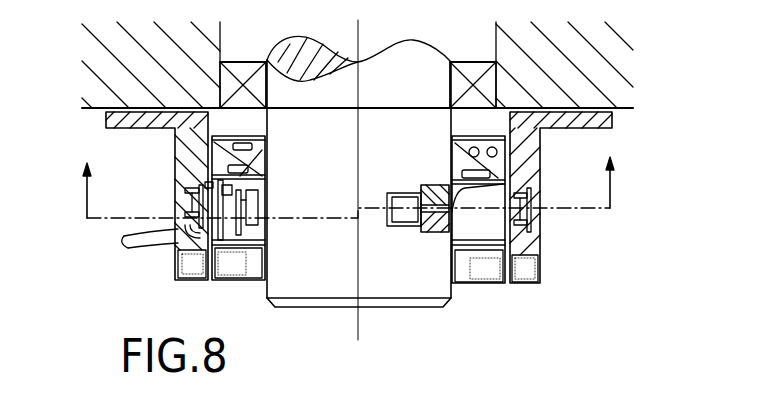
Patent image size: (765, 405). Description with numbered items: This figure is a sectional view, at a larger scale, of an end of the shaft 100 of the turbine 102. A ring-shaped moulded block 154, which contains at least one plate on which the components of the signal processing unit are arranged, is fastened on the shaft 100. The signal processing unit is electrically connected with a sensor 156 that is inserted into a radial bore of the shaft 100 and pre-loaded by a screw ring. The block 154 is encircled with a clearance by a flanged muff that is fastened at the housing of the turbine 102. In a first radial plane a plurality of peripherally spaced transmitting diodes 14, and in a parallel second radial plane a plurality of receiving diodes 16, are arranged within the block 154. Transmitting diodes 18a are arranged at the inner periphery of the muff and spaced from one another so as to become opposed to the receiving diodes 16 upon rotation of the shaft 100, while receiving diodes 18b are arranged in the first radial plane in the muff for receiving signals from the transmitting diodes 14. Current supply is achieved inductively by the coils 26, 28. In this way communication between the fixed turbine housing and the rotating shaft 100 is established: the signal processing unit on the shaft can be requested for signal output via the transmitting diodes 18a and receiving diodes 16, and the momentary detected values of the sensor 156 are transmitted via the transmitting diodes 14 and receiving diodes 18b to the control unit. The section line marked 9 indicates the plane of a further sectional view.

The turbine 102 is at (592, 75).
The transmitting diodes 14 is at (220, 280).
The coil 26 is at (528, 283).
The coil 28 is at (494, 283).
The ring-shaped moulded block 154 is at (257, 263).
The shaft 100 is at (326, 290).
The sensor 156 is at (403, 216).
The section line 9- 9 is at (346, 184).
The receiving diodes 16 is at (212, 182).
The transmitting diodes 18a is at (206, 186).
The receiving diodes 18b is at (188, 212).